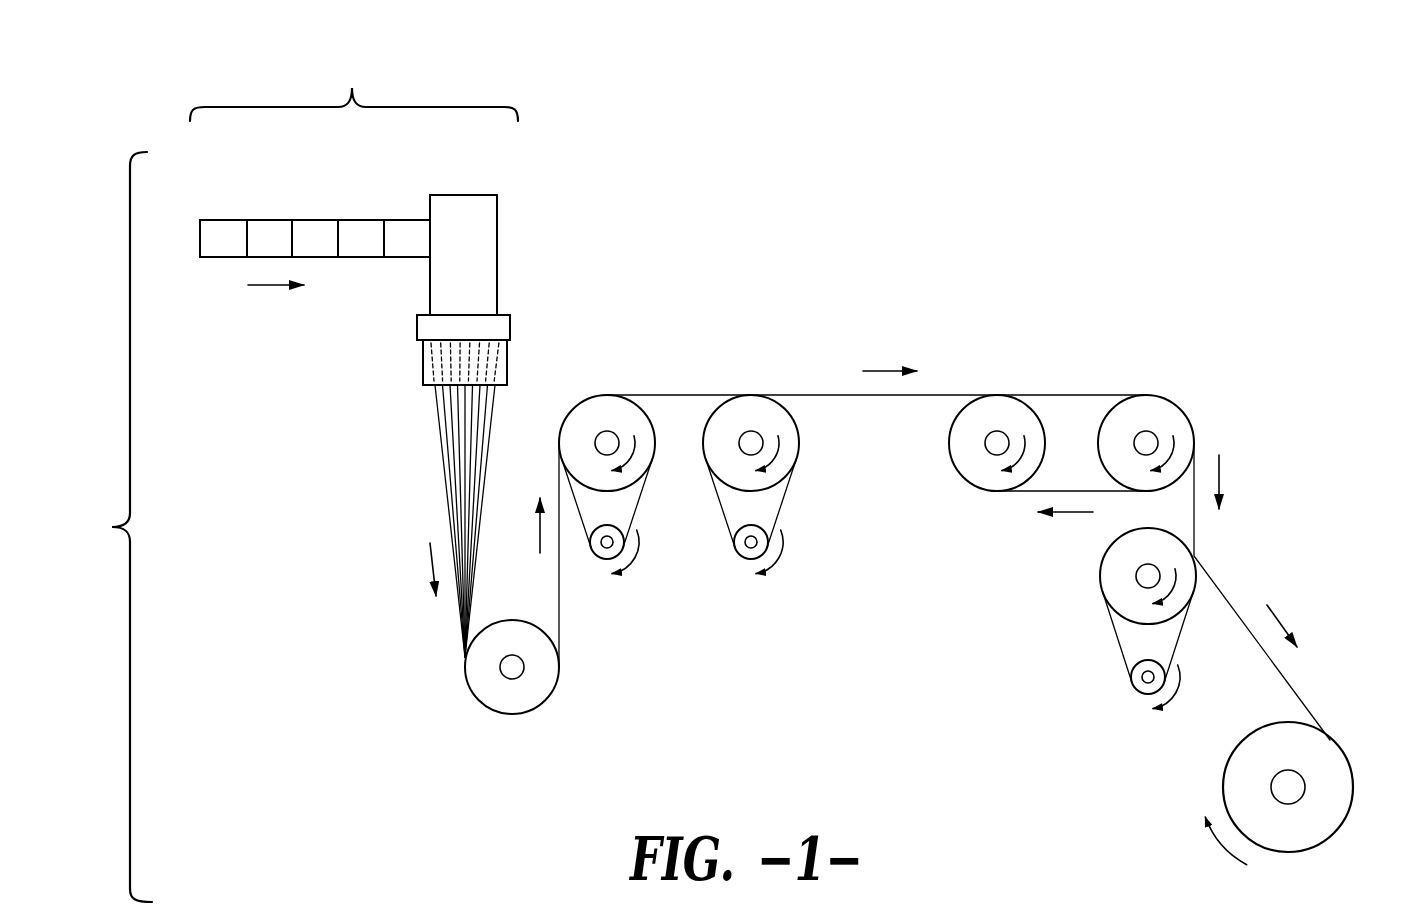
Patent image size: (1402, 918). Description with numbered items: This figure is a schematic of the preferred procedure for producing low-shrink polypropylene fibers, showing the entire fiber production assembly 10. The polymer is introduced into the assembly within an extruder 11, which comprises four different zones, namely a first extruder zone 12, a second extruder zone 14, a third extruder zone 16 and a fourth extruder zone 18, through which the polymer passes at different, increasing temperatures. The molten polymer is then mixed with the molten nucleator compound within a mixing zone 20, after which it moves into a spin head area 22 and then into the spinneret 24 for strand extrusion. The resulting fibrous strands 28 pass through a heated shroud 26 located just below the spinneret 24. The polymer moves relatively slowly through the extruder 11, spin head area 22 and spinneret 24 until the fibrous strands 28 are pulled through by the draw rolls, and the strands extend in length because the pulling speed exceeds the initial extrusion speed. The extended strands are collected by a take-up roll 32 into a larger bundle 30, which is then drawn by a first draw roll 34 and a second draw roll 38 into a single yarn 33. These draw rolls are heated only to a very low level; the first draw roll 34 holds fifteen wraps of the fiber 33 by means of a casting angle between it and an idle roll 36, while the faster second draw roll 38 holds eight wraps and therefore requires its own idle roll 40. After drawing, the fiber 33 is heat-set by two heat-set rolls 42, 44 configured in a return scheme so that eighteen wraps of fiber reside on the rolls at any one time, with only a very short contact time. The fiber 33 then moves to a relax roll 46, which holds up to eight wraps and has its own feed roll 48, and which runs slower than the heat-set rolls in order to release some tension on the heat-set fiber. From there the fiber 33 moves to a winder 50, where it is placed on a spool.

The fiber production assembly 10 is at (109, 527).
The extruder 11 is at (352, 86).
The first extruder zone 12 is at (217, 220).
The second extruder zone 14 is at (260, 220).
The third extruder zone 16 is at (308, 220).
The fourth extruder zone 18 is at (352, 220).
The mixing zone 20 is at (398, 220).
The spin head area 22 is at (497, 230).
The spinneret 24 is at (510, 317).
The heated shroud 26 is at (422, 372).
The fibrous strands 28 is at (507, 378).
The bundle 30 is at (463, 660).
The take-up roll 32 is at (537, 683).
The yarn 33 is at (560, 613).
The first draw roll 34 is at (603, 410).
The idle roll 36 is at (612, 527).
The second draw roll 38 is at (747, 410).
The idle roll 40 is at (758, 524).
The heat-set roll 42 is at (998, 408).
The heat-set roll 44 is at (1143, 408).
The relax roll 46 is at (1117, 578).
The feed roll 48 is at (1130, 660).
The winder 50 is at (1322, 753).